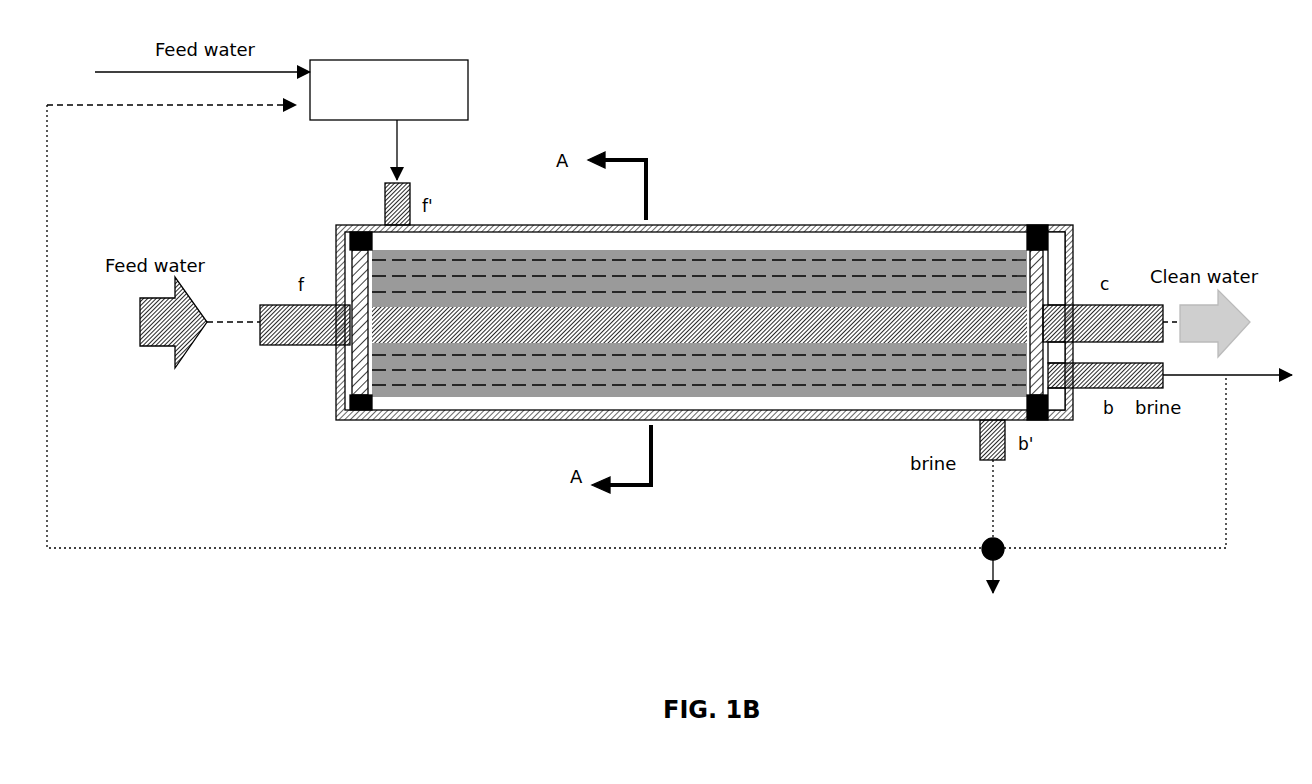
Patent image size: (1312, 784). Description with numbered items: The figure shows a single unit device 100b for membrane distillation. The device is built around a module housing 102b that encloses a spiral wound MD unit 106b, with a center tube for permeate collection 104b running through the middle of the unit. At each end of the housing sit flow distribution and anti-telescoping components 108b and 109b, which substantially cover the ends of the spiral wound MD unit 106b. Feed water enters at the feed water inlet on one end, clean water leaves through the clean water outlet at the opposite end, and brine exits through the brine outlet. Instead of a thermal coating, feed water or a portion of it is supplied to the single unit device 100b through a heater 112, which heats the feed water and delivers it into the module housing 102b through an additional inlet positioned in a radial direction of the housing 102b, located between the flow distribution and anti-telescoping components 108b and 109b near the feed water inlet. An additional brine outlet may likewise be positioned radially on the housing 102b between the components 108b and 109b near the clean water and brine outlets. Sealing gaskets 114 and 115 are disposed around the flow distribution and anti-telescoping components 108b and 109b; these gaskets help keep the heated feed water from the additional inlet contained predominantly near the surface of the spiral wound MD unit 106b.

The single unit device 100b is at (1086, 77).
The heater 112 is at (389, 120).
The module housing 102b is at (704, 260).
The spiral wound MD unit 106b is at (699, 201).
The center tube for permeate collection 104b is at (699, 426).
The flow distribution and anti-telescoping component 108b is at (283, 338).
The sealing gasket 115 is at (392, 453).
The sealing gasket 114 is at (1006, 257).
The flow distribution and anti-telescoping component 109b is at (1098, 277).